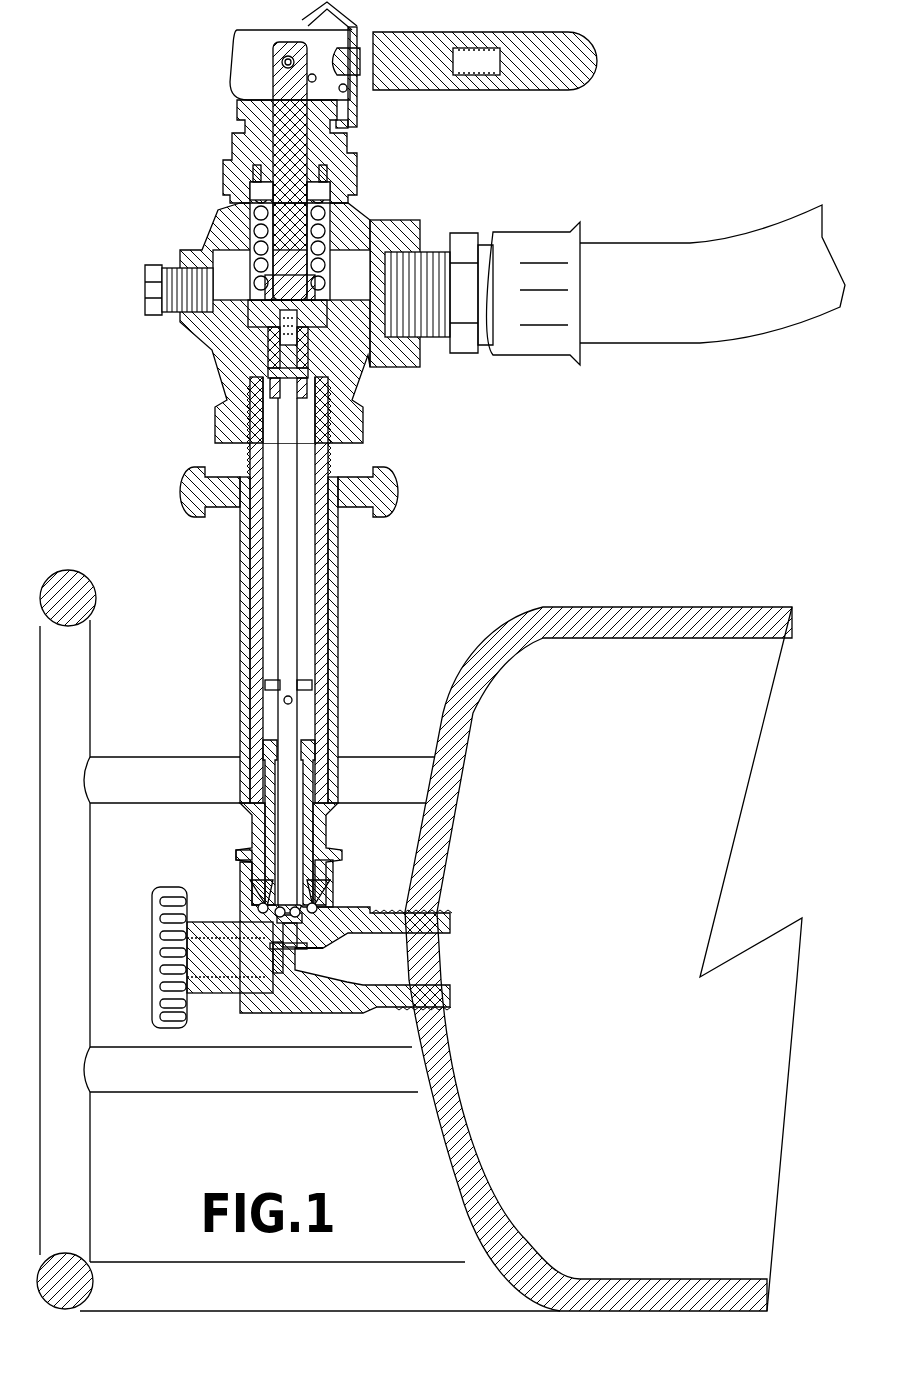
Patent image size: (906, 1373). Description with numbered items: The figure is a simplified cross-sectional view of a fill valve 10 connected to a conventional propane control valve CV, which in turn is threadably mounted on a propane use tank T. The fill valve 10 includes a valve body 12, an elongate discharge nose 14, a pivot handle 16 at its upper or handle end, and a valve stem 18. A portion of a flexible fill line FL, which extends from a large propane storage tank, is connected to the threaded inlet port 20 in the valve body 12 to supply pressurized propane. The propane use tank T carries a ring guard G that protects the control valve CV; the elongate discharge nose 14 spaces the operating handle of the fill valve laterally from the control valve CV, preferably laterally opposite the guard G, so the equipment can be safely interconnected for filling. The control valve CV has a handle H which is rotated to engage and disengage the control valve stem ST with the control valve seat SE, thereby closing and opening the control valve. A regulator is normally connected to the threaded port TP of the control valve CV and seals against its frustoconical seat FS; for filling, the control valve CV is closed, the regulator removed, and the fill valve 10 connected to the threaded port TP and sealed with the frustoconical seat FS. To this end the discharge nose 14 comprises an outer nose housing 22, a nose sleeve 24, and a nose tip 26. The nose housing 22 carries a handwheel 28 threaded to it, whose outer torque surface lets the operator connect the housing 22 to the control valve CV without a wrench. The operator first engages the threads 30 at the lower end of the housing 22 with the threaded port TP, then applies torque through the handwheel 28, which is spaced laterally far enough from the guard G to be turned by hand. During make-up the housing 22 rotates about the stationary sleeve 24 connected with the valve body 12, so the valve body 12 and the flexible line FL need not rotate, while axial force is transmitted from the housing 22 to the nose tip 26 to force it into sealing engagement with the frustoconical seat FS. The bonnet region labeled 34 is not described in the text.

The fill valve 10 is at (352, 641).
The valve body 12 is at (223, 233).
The elongate discharge nose 14 is at (212, 752).
The pivot handle 16 is at (533, 83).
The valve stem 18 is at (287, 591).
The threaded inlet port 20 is at (407, 270).
The outer nose housing 22 is at (335, 718).
The nose sleeve 24 is at (320, 655).
The nose tip 26 is at (263, 798).
The handwheel 28 is at (355, 507).
The threads 30 is at (237, 848).
The bonnet 34 is at (230, 162).
The propane use tank T is at (627, 612).
The ring guard G is at (75, 835).
The flexible fill line FL is at (638, 325).
The handle H is at (157, 952).
The control valve stem ST is at (245, 980).
The control valve CV is at (293, 1003).
The control valve seat SE is at (297, 950).
The threaded port TP is at (300, 878).
The frustoconical seat FS is at (262, 890).